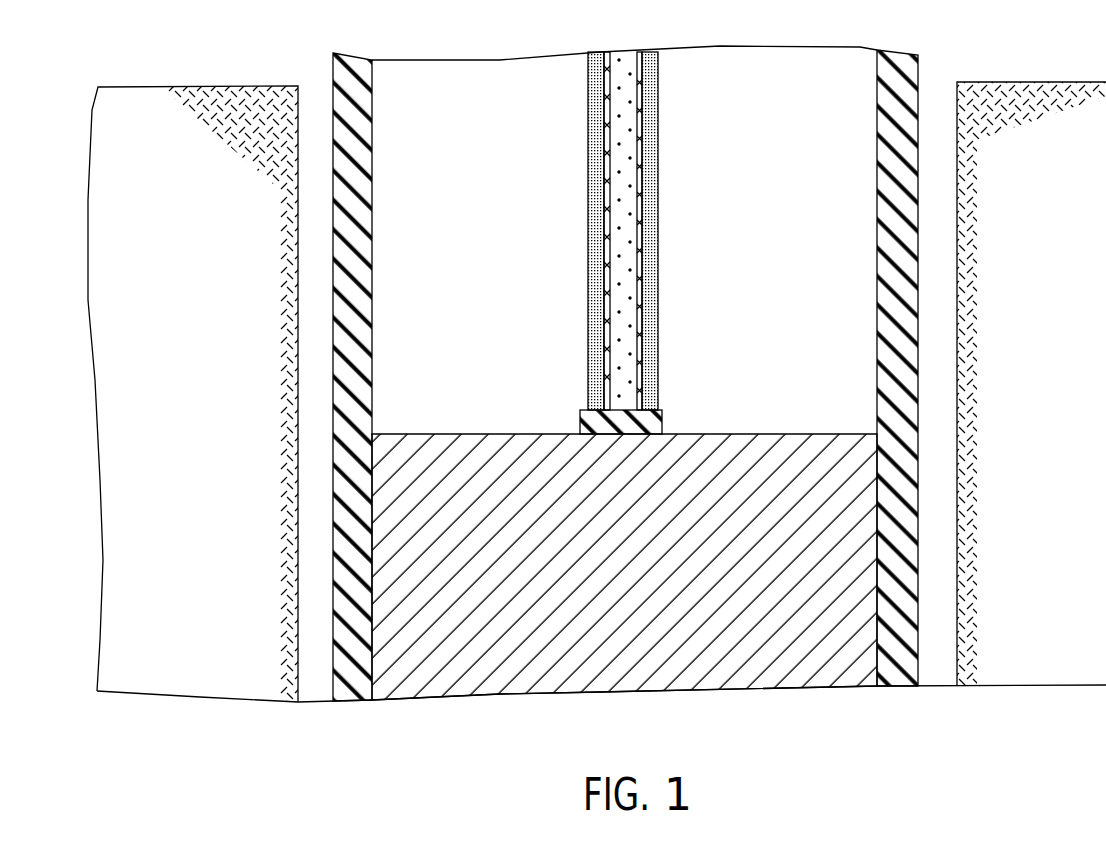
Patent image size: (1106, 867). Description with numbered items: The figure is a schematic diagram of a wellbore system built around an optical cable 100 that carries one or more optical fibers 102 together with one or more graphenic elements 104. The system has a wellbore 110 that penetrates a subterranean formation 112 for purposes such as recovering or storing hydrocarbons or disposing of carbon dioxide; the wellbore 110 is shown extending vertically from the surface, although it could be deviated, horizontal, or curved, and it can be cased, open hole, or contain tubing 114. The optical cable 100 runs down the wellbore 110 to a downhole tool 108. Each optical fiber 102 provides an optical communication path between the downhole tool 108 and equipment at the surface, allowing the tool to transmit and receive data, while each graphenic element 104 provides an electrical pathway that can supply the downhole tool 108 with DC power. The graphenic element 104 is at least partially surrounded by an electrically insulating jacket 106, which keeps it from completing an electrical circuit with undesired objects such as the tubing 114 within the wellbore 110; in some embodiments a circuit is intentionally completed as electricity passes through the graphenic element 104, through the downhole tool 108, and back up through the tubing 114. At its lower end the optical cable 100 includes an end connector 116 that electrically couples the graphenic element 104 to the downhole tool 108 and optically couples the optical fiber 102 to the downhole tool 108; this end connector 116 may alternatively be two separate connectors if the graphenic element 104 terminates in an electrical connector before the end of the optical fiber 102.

The optical cable 100 is at (505, 125).
The optical fiber 102 is at (618, 208).
The graphenic element 104 is at (640, 262).
The jacket 106 is at (650, 162).
The downhole tool 108 is at (745, 445).
The wellbore 110 is at (943, 303).
The subterranean formation 112 is at (283, 303).
The tubing 114 is at (362, 400).
The end connector 116 is at (583, 420).